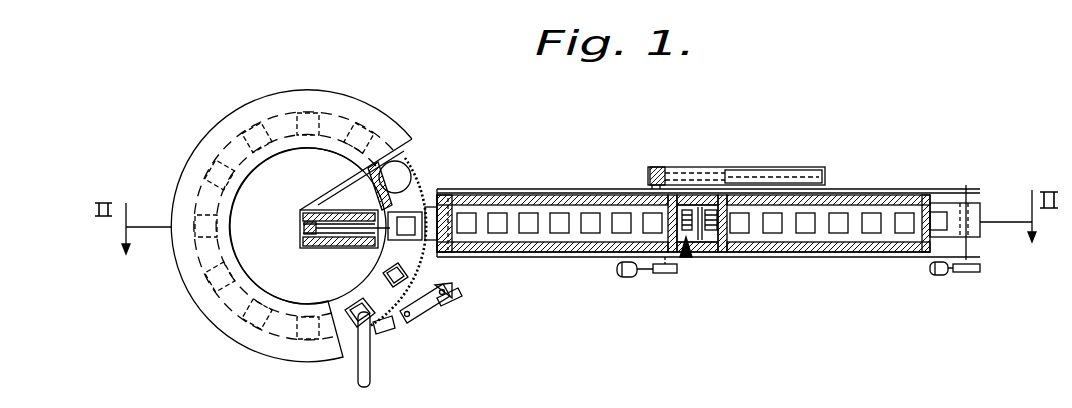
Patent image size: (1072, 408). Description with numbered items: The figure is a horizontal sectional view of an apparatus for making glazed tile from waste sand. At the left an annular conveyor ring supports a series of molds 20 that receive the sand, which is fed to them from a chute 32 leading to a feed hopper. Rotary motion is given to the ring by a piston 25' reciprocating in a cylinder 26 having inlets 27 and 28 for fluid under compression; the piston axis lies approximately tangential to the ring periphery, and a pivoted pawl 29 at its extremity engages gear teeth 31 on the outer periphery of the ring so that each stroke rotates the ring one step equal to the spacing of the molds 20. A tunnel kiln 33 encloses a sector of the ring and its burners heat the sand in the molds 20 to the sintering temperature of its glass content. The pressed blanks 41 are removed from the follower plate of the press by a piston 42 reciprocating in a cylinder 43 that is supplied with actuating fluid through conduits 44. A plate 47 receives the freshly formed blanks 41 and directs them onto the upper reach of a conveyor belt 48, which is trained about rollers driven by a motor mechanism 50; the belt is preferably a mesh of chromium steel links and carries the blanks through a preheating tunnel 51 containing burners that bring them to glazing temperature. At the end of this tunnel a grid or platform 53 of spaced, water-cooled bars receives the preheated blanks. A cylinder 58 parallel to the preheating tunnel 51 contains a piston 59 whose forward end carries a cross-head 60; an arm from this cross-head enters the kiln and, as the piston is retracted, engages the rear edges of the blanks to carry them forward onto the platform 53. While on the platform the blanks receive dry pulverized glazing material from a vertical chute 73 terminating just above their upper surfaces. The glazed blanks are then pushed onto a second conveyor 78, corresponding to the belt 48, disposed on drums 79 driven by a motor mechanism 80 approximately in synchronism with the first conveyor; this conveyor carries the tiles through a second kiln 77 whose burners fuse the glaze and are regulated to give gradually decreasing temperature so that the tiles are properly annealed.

The molds 20 is at (394, 121).
The piston 25' is at (404, 348).
The cylinder 26 is at (445, 318).
The inlet 27 is at (455, 305).
The inlet 28 is at (423, 327).
The pivoted pawl 29 is at (378, 330).
The gear teeth 31 is at (412, 266).
The chute 32 is at (359, 362).
The tunnel kiln 33 is at (412, 140).
The blanks 41 is at (498, 228).
The piston 42 is at (346, 243).
The cylinder 43 is at (317, 245).
The conduits 44 is at (301, 224).
The plate 47 is at (429, 208).
The conveyor belt 48 is at (453, 243).
The motor mechanism 50 is at (626, 278).
The preheating tunnel 51 is at (545, 251).
The grid or platform 53 is at (686, 250).
The cylinder 58 is at (753, 173).
The piston 59 is at (705, 175).
The cross-head 60 is at (665, 167).
The vertical chute 73 is at (700, 240).
The second kiln 77 is at (826, 250).
The second conveyor 78 is at (940, 238).
The drums 79 is at (977, 235).
The motor mechanism 80 is at (937, 276).